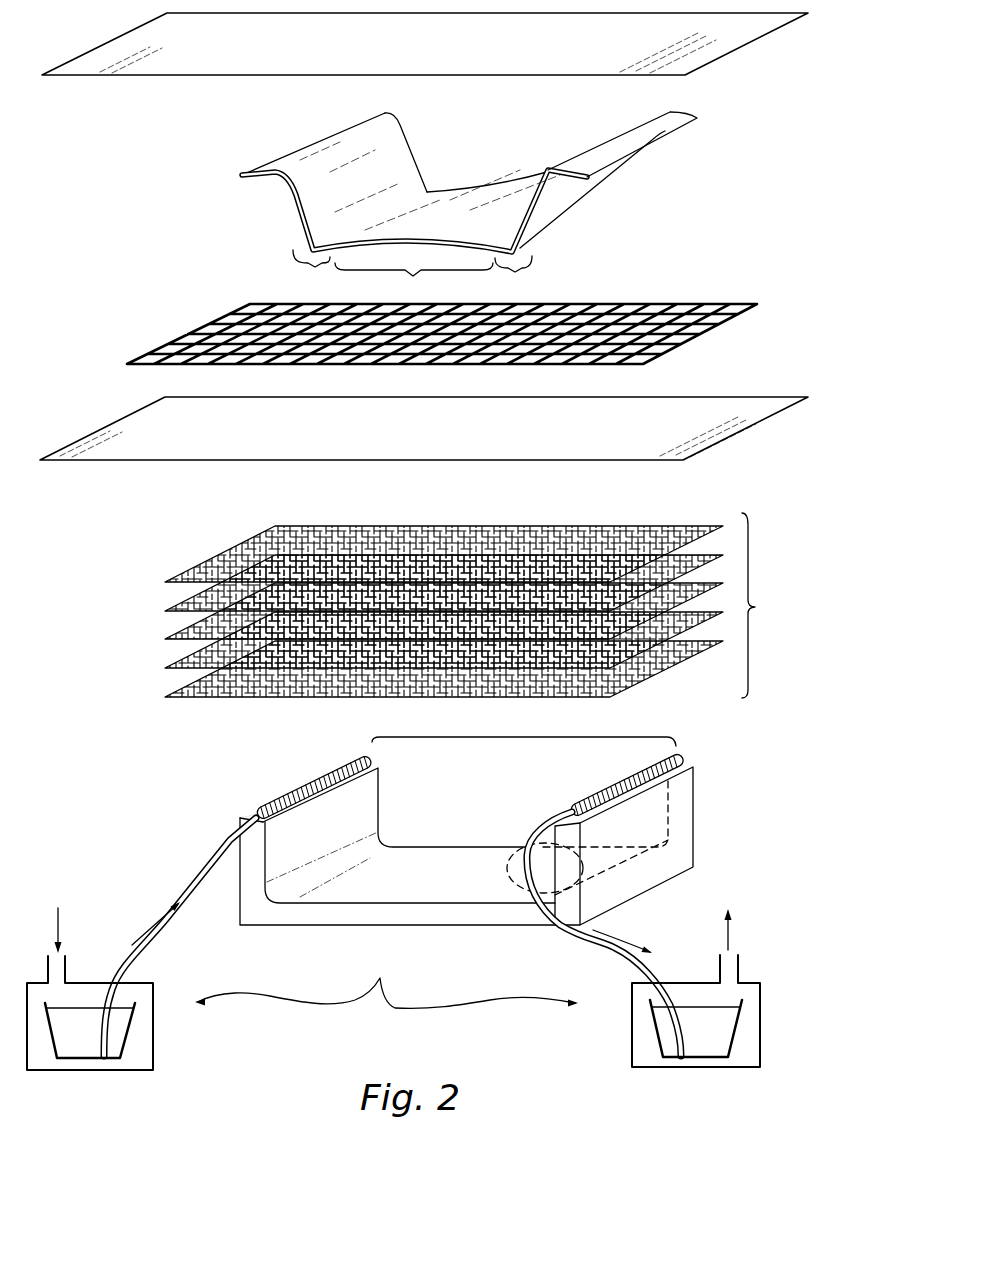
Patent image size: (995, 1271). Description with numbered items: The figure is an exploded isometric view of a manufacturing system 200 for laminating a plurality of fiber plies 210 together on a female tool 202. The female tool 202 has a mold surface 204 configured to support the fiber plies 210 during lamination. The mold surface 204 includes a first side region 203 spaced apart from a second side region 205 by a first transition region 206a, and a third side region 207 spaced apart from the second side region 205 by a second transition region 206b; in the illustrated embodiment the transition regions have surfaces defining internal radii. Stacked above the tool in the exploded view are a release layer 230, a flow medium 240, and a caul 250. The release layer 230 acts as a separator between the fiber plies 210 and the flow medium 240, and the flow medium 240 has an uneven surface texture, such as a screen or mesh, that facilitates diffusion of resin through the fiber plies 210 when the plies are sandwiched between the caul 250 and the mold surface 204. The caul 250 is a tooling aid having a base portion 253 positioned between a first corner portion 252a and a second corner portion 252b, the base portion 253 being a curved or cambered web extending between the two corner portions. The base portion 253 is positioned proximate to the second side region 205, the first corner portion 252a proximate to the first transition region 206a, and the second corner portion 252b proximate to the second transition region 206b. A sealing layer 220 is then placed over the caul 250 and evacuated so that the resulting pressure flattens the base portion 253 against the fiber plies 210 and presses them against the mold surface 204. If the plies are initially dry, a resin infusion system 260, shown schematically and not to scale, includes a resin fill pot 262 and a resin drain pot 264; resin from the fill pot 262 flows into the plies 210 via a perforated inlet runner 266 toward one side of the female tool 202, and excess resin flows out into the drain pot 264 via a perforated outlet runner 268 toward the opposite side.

The manufacturing system 200 is at (119, 190).
The female tool 202 is at (693, 823).
The first side region 203 is at (535, 850).
The mold surface 204 is at (535, 737).
The second side region 205 is at (447, 862).
The first transition region 206a is at (535, 870).
The second transition region 206b is at (307, 893).
The third side region 207 is at (327, 826).
The fiber plies 210 is at (757, 607).
The sealing layer 220 is at (693, 73).
The release layer 230 is at (698, 405).
The flow medium 240 is at (698, 305).
The caul 250 is at (670, 137).
The first corner portion 252a is at (522, 268).
The second corner portion 252b is at (300, 265).
The base portion 253 is at (413, 276).
The resin infusion system 260 is at (386, 979).
The resin fill pot 262 is at (128, 1037).
The resin drain pot 264 is at (658, 1032).
The perforated inlet runner 266 is at (293, 790).
The perforated outlet runner 268 is at (598, 800).